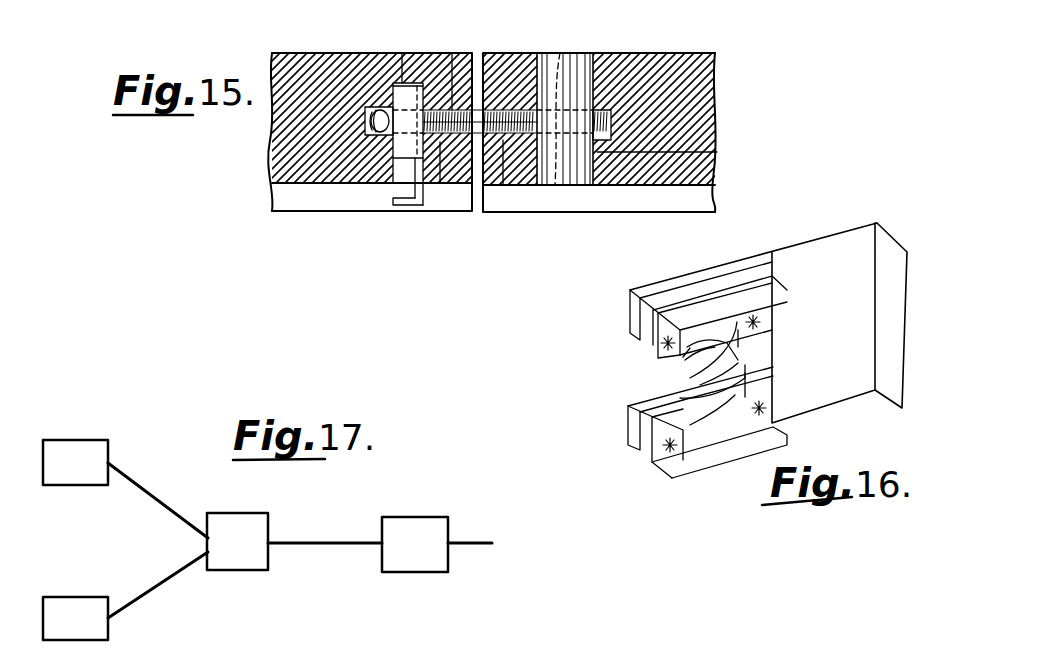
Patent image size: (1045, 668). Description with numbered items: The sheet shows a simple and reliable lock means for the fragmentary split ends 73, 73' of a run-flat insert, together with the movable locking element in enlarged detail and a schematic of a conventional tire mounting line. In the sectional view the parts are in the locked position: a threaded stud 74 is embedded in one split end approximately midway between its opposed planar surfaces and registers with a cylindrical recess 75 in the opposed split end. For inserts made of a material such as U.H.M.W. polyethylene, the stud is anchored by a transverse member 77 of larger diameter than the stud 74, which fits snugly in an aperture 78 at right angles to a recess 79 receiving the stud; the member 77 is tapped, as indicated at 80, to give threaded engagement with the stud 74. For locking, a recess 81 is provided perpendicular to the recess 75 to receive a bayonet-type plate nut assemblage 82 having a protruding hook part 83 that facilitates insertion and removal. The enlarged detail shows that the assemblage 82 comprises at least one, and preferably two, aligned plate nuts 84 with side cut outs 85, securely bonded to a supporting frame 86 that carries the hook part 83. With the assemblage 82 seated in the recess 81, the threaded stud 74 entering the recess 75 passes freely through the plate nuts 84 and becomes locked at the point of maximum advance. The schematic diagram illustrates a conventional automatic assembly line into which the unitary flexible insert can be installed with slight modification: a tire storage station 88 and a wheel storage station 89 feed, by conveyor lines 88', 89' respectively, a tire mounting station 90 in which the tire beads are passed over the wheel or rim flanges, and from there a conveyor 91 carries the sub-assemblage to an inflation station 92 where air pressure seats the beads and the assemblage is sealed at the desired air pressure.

In FIG. 15, the split end 73 is at (370, 111).
In FIG. 15, the split end 73' is at (599, 110).
In FIG. 15, the threaded stud 74 is at (450, 110).
In FIG. 15, the cylindrical recess 75 is at (440, 183).
In FIG. 15, the transverse member 77 is at (576, 29).
In FIG. 15, the aperture 78 is at (717, 152).
In FIG. 15, the recess 79 is at (503, 185).
In FIG. 15, the tapped portion 80 is at (555, 185).
In FIG. 15, the recess 81 is at (401, 80).
In FIG. 15, the bayonet-type plate nut assemblage 82 is at (402, 160).
In FIG. 16, the bayonet-type plate nut assemblage 82 is at (809, 236).
In FIG. 15, the hook part 83 is at (401, 206).
In FIG. 16, the hook part 83 is at (887, 298).
In FIG. 16, the plate nut 84 is at (683, 398).
In FIG. 16, the side cut out 85 is at (690, 367).
In FIG. 16, the supporting frame 86 is at (850, 363).
In FIG. 17, the tire storage station 88 is at (75, 462).
In FIG. 17, the conveyor line 88' is at (152, 500).
In FIG. 17, the wheel storage station 89 is at (75, 618).
In FIG. 17, the conveyor line 89' is at (153, 585).
In FIG. 17, the tire mounting station 90 is at (237, 541).
In FIG. 17, the conveyor 91 is at (325, 542).
In FIG. 17, the inflation station 92 is at (415, 544).